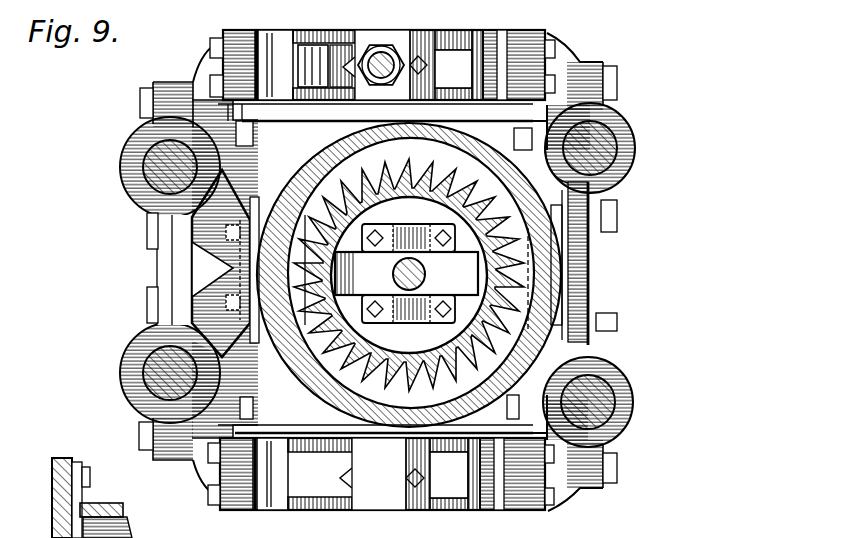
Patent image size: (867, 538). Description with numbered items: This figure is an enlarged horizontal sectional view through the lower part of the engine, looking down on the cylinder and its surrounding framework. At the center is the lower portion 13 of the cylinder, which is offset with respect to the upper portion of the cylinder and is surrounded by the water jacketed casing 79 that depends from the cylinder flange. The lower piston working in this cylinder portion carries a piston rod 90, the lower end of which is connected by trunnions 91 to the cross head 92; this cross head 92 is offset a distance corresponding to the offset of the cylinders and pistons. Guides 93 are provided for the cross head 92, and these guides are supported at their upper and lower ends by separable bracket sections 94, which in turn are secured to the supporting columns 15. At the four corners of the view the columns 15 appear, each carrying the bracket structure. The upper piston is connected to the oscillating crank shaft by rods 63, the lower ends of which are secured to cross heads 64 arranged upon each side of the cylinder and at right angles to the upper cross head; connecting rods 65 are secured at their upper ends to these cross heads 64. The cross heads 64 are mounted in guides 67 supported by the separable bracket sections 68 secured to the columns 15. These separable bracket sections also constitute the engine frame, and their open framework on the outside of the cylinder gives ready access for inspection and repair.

The lower portion of the cylinder 13 is at (345, 192).
The supporting columns 15 is at (163, 168).
The rod 63 is at (389, 61).
The cross head 64 is at (488, 46).
The connecting rod 65 is at (352, 22).
The guide 67 is at (550, 40).
The separable bracket section 68 is at (583, 198).
The water jacketed casing 79 is at (536, 305).
The piston rod 90 is at (459, 271).
The trunnions 91 is at (378, 323).
The cross head 92 is at (557, 250).
The guide 93 is at (158, 334).
The separable bracket section 94 is at (564, 190).